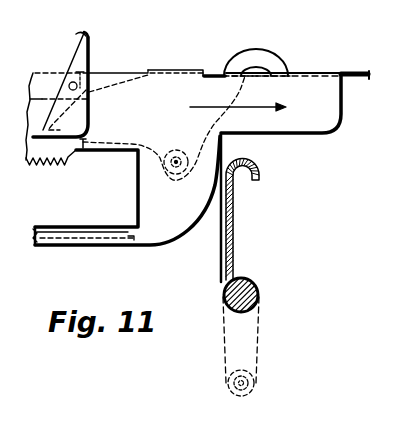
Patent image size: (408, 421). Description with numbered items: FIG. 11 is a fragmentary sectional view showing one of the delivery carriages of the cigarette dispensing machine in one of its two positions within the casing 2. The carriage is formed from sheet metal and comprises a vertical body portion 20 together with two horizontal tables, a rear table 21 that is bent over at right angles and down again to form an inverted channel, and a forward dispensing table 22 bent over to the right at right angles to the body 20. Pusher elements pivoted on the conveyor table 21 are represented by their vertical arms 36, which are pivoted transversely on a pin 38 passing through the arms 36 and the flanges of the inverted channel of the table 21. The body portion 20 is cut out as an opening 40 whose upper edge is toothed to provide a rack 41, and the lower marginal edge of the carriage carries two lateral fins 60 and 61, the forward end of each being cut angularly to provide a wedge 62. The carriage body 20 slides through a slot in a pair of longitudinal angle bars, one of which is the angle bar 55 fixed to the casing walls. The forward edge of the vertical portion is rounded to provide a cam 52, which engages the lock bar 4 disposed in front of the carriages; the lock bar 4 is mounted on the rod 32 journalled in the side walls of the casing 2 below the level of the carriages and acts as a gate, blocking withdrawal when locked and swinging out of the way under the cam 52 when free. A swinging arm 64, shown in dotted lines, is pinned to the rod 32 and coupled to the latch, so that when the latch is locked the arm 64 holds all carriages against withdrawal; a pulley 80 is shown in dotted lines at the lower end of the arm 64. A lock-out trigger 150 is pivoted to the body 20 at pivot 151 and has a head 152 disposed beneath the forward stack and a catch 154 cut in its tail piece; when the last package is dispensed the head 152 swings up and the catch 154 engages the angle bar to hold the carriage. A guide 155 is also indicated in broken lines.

The casing 2 is at (310, 136).
The lock bar 4 is at (232, 233).
The vertical body portion 20 is at (167, 222).
The rear table 21 is at (339, 71).
The forward table 22 is at (62, 92).
The rod 32 is at (239, 282).
The vertical arms 36 is at (77, 48).
The pin 38 is at (77, 84).
The opening 40 is at (92, 216).
The rack 41 is at (37, 165).
The cam 52 is at (185, 232).
The angle bar 55 is at (93, 32).
The lateral fin 60 is at (66, 245).
The lateral fin 61 is at (70, 223).
The wedge 62 is at (128, 229).
The swinging arm 64 is at (256, 363).
The pulley 80 is at (254, 380).
The lock-out trigger 150 is at (230, 57).
The pivot 151 is at (176, 164).
The head 152 is at (262, 64).
The catch 154 is at (124, 143).
The thread guide 155 is at (82, 150).